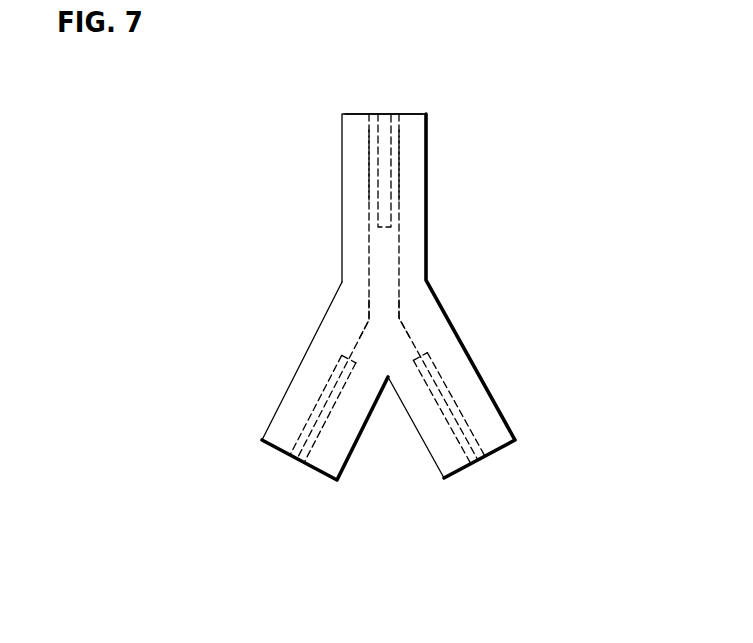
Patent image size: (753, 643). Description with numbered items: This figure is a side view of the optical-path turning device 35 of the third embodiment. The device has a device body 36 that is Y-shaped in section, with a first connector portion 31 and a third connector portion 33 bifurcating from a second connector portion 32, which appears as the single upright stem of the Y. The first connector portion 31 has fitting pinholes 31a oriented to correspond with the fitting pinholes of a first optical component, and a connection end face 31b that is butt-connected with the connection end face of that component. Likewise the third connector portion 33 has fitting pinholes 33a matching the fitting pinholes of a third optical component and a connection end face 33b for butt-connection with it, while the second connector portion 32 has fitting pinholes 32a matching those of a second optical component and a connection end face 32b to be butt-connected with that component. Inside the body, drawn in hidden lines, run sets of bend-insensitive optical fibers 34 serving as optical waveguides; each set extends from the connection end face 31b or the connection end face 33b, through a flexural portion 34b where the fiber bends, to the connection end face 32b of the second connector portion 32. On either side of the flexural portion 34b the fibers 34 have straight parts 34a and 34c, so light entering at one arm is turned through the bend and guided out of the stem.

The optical-path turning device 35 is at (384, 271).
The first connector portion 31 is at (282, 398).
The fitting pinholes 31a is at (295, 458).
The connection end face 31b is at (318, 473).
The second connector portion 32 is at (426, 175).
The fitting pinholes 32a is at (385, 110).
The connection end face 32b is at (417, 112).
The third connector portion 33 is at (488, 385).
The fitting pinholes 33a is at (481, 459).
The connection end face 33b is at (458, 470).
The bend-insensitive optical fibers 34 is at (465, 250).
The straight part 34a is at (387, 425).
The flexural portion 34b is at (367, 318).
The straight part 34c is at (465, 155).
The device body 36 is at (426, 207).